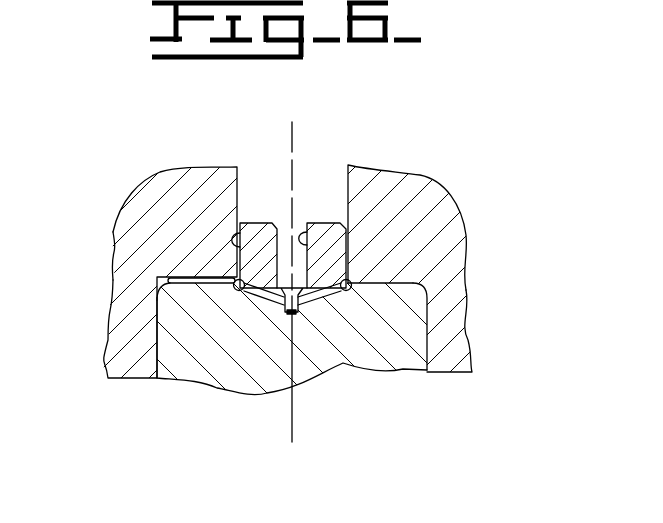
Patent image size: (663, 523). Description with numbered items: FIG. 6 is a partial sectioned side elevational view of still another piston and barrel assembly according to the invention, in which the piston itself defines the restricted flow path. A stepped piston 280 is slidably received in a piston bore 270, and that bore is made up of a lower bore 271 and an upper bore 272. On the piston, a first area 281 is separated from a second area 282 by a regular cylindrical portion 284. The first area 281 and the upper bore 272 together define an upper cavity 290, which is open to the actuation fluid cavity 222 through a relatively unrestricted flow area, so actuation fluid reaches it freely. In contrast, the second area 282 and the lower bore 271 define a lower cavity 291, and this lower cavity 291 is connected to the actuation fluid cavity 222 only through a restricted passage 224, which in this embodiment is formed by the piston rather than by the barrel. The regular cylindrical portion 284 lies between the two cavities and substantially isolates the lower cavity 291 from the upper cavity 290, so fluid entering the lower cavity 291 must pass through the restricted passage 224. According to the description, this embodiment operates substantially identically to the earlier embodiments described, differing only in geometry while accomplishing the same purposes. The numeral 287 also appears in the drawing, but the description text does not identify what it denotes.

The actuation fluid cavity 222 is at (286, 172).
The restricted passage 224 is at (262, 292).
The piston bore 270 is at (407, 325).
The lower bore 271 is at (158, 360).
The upper bore 272 is at (240, 240).
The stepped piston 280 is at (430, 351).
The first area 281 is at (316, 220).
The second area 282 is at (200, 278).
The regular cylindrical portion 284 is at (348, 267).
The O-ring 287 is at (302, 237).
The upper cavity 290 is at (263, 208).
The lower cavity 291 is at (428, 276).